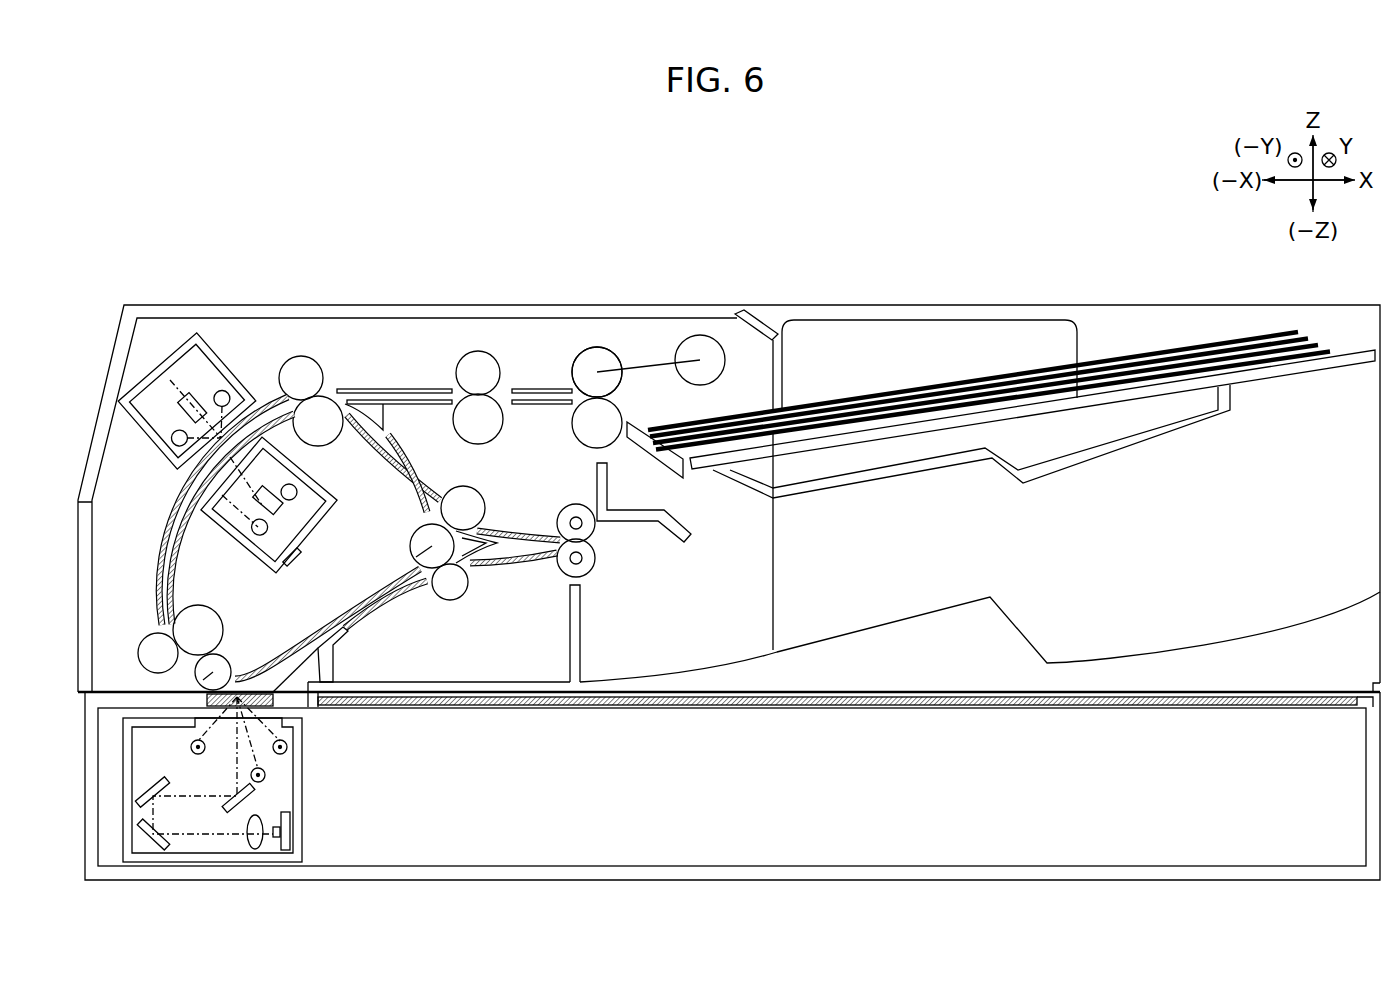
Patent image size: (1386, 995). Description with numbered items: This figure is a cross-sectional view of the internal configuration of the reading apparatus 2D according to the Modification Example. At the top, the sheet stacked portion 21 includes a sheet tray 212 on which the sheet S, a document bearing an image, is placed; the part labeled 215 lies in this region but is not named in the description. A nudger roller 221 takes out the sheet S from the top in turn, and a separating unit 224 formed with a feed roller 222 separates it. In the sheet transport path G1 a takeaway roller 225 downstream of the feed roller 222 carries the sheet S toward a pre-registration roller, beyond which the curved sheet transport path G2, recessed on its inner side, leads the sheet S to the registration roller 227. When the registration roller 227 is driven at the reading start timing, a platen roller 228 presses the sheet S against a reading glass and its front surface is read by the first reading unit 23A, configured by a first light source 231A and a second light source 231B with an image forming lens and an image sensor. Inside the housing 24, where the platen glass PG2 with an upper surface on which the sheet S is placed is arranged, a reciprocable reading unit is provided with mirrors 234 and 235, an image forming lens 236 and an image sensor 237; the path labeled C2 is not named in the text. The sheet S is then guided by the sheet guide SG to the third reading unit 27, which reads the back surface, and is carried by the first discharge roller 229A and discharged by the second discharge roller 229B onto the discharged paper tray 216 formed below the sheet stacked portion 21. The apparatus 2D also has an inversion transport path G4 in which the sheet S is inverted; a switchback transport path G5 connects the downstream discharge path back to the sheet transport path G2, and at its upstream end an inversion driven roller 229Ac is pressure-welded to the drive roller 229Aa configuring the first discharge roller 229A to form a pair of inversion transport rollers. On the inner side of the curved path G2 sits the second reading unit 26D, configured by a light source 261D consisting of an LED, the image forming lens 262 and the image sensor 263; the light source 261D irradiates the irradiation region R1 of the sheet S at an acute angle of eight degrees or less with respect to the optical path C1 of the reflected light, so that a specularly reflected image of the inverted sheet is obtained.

The reading apparatus 2D is at (151, 204).
The third reading unit 27 is at (181, 334).
The irradiation region R1 is at (250, 447).
The sheet transport path G1 is at (420, 388).
The takeaway roller 225 is at (455, 364).
The separating unit 224 is at (568, 362).
The feed roller 222 is at (597, 371).
The nudger roller 221 is at (700, 360).
The document tray cover 215 is at (900, 347).
The sheet stacked portion 21 is at (928, 302).
The sheet S is at (1097, 362).
The sheet tray 212 is at (1114, 400).
The image forming lens 262 is at (297, 492).
The switchback transport path G5 is at (418, 470).
The inversion driven roller 229Ac is at (465, 506).
The second reading unit 26D is at (305, 552).
The sheet transport path G2 is at (170, 520).
The optical path C1 is at (234, 533).
The light source 261D is at (216, 613).
The image sensor 263 is at (293, 565).
The registration roller 227 is at (146, 634).
The platen roller 228 is at (227, 661).
The drive roller 229Aa is at (420, 567).
The first discharge roller 229A is at (478, 581).
The inversion transport path G4 is at (499, 568).
The second discharge roller 229B is at (604, 553).
The sheet guide SG is at (333, 665).
The discharged paper tray 216 is at (1183, 657).
The second light source 231B is at (191, 747).
The mirror 234 is at (145, 788).
The mirror 235 is at (142, 830).
The second reading unit optical path C2 is at (216, 764).
The first light source 231A is at (265, 775).
The first reading unit 23A is at (305, 814).
The image forming lens 236 is at (246, 843).
The image sensor 237 is at (279, 840).
The housing 24 is at (423, 872).
The platen glass PG2 is at (923, 703).